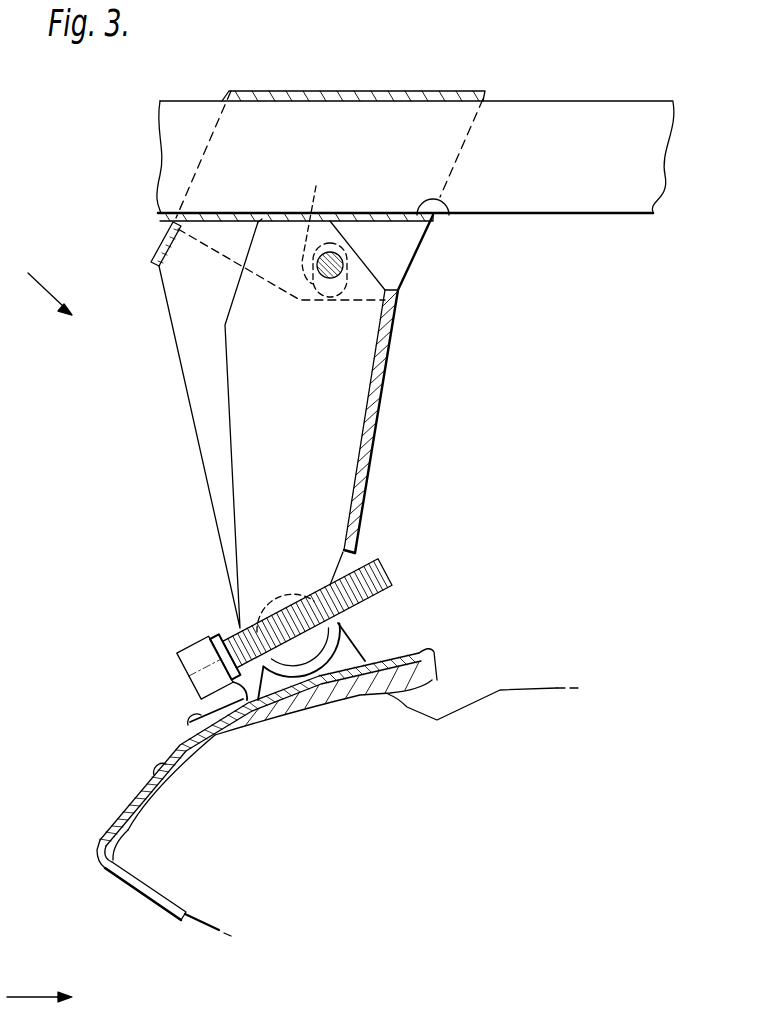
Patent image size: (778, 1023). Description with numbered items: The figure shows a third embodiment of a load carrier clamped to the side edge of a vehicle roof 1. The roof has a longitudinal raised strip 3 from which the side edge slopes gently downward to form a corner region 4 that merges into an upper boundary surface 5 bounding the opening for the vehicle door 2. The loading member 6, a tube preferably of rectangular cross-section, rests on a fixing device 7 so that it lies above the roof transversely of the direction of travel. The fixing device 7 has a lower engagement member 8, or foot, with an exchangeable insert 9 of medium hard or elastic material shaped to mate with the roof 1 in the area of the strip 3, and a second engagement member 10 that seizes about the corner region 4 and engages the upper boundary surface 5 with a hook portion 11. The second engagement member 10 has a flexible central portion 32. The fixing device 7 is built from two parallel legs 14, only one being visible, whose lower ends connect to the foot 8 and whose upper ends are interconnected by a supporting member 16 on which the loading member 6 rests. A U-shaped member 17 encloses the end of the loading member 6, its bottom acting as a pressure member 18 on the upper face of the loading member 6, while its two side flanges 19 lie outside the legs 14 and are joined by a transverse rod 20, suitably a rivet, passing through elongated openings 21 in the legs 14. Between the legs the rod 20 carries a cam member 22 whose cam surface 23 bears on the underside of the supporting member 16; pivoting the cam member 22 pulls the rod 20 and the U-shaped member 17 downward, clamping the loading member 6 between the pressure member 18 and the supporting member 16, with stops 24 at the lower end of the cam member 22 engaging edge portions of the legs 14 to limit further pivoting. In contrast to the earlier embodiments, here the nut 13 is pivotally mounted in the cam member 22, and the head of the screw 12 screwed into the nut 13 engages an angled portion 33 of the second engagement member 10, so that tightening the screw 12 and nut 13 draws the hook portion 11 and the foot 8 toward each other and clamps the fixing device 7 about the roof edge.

The vehicle roof 1 is at (530, 688).
The opening for the vehicle door 2 is at (39, 982).
The longitudinal raised strip 3 is at (410, 700).
The corner region 4 is at (110, 866).
The upper boundary surface 5 is at (200, 921).
The loading member 6 is at (545, 114).
The fixing device 7 is at (52, 289).
The lower engagement member 8 is at (410, 628).
The exchangeable insert 9 is at (432, 690).
The second engagement member 10 is at (133, 797).
The hook portion 11 is at (147, 897).
The screw 12 is at (197, 645).
The nut 13 is at (283, 590).
The legs 14 is at (183, 339).
The supporting member 16 is at (446, 219).
The U-shaped member 17 is at (235, 115).
The pressure member 18 is at (318, 115).
The side flanges 19 is at (375, 288).
The transverse rod 20 is at (327, 243).
The elongated openings 21 is at (324, 227).
The cam member 22 is at (340, 405).
The cam surface 23 is at (259, 221).
The stops 24 is at (355, 560).
The flexible central portion 32 is at (180, 737).
The angled portion 33 is at (220, 623).